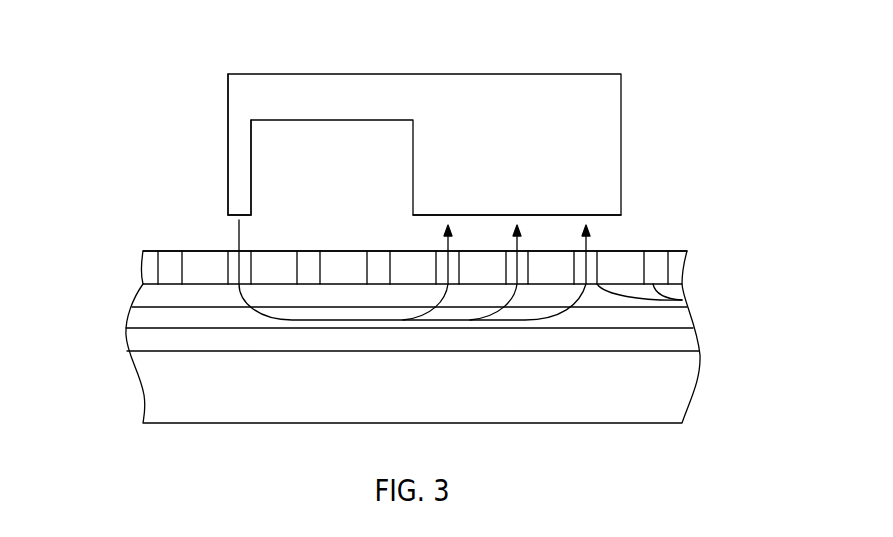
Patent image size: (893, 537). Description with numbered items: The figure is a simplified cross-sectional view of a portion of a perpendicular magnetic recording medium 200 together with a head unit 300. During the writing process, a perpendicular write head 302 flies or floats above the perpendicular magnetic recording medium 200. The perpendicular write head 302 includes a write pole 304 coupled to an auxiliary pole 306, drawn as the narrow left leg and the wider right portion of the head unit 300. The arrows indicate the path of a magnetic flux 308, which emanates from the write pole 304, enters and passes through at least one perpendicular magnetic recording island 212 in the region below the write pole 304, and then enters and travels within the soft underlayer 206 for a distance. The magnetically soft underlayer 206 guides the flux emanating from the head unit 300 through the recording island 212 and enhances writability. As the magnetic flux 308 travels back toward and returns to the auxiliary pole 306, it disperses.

The head unit 300 is at (537, 53).
The perpendicular write head 302 is at (238, 160).
The write pole 304 is at (232, 216).
The auxiliary pole 306 is at (609, 218).
The perpendicular magnetic recording medium 200 is at (408, 321).
The perpendicular magnetic recording island 212 is at (683, 300).
The soft underlayer 206 is at (693, 317).
The magnetic flux 308 is at (257, 310).